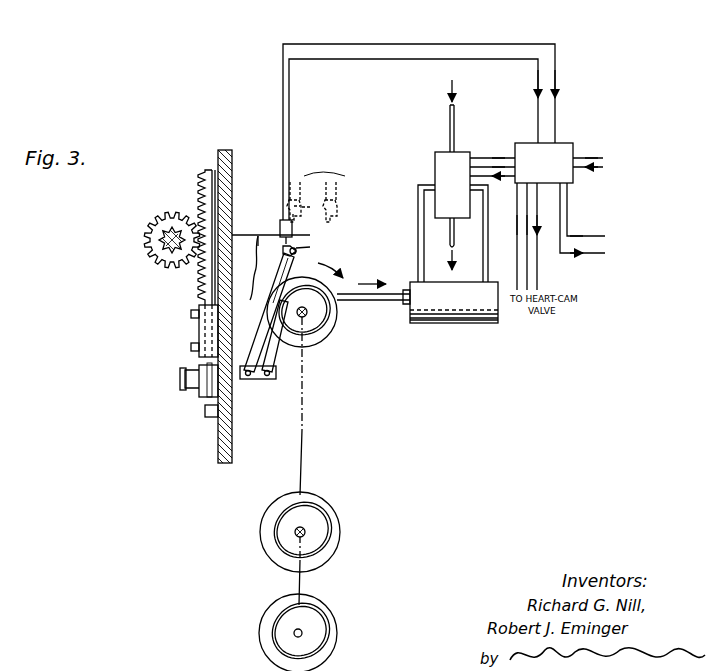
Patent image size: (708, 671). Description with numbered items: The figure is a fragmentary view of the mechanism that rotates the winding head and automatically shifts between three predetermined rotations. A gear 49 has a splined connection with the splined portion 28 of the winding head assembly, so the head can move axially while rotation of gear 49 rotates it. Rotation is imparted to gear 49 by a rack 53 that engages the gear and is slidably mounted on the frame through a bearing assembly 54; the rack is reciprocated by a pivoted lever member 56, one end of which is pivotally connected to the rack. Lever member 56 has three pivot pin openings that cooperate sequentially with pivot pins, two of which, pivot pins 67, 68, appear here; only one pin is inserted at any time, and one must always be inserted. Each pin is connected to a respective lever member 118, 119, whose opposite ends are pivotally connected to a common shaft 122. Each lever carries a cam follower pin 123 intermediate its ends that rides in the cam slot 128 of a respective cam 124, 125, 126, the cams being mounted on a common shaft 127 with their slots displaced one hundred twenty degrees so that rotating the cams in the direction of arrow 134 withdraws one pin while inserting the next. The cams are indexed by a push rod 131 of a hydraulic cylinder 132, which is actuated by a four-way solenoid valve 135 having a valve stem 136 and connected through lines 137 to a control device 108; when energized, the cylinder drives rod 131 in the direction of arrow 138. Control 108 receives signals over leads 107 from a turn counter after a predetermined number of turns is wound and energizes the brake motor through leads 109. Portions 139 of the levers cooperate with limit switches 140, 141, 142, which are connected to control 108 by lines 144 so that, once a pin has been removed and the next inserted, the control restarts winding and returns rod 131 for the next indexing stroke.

The splined portion 28 is at (162, 246).
The gear 49 is at (163, 212).
The rack 53 is at (200, 185).
The bearing assembly 54 is at (199, 330).
The pivoted lever member 56 is at (180, 379).
The pivot pin 67 is at (240, 380).
The pivot pin 68 is at (262, 378).
The leads 107 is at (604, 163).
The control device 108 is at (570, 142).
The leads 109 is at (606, 241).
The lever member 118 is at (258, 365).
The lever member 119 is at (272, 358).
The common shaft 122 is at (297, 250).
The cam follower pin 123 is at (270, 304).
The cam 124 is at (333, 332).
The cam 125 is at (340, 536).
The cam 126 is at (338, 632).
The common shaft 127 is at (302, 423).
The cam slot 128 is at (323, 318).
The push rod 131 is at (394, 293).
The hydraulic cylinder 132 is at (467, 324).
The arrow 134 is at (352, 254).
The four-way solenoid valve 135 is at (435, 162).
The valve stem 136 is at (457, 118).
The lines 137 is at (483, 150).
The arrow 138 is at (366, 284).
The portions 139 is at (296, 242).
The limit switch 140 is at (280, 227).
The limit switch 141 is at (296, 198).
The limit switch 142 is at (338, 204).
The lines 144 is at (462, 36).